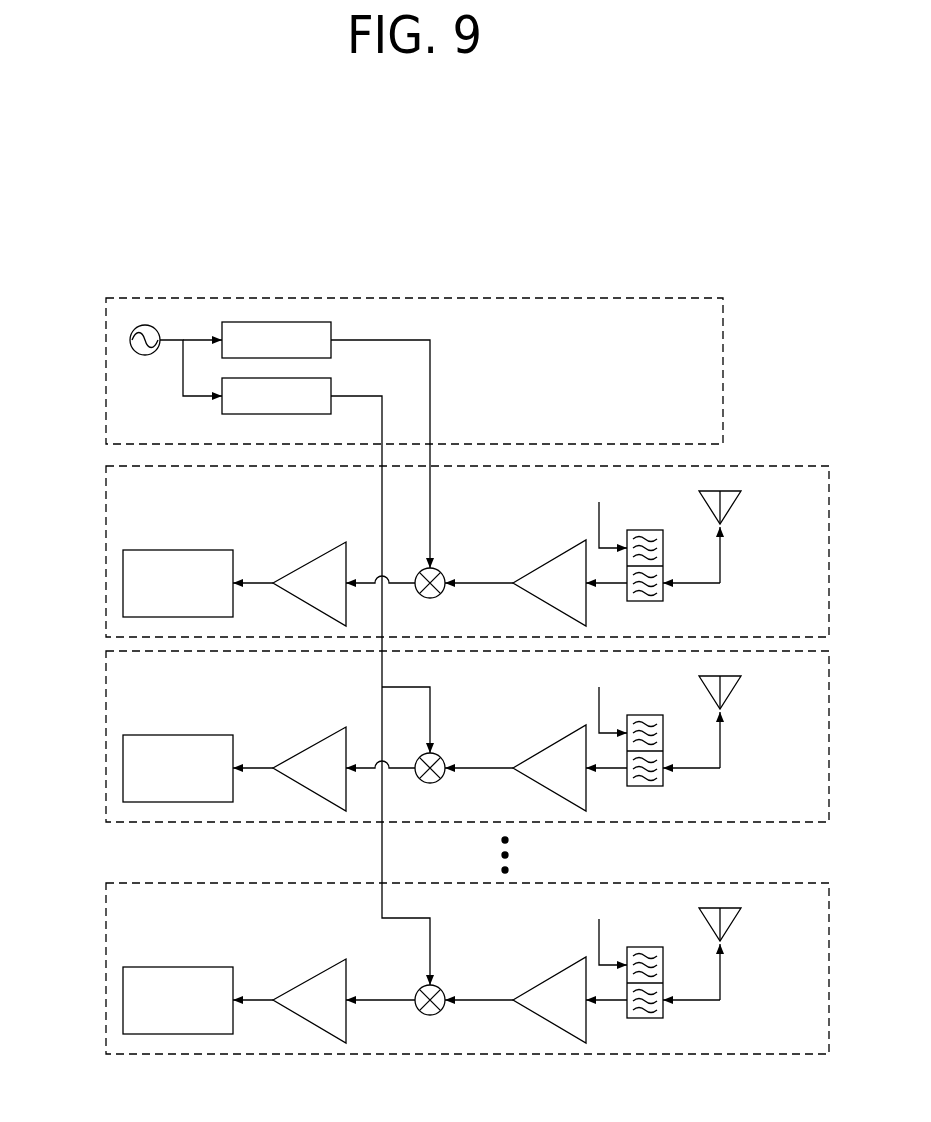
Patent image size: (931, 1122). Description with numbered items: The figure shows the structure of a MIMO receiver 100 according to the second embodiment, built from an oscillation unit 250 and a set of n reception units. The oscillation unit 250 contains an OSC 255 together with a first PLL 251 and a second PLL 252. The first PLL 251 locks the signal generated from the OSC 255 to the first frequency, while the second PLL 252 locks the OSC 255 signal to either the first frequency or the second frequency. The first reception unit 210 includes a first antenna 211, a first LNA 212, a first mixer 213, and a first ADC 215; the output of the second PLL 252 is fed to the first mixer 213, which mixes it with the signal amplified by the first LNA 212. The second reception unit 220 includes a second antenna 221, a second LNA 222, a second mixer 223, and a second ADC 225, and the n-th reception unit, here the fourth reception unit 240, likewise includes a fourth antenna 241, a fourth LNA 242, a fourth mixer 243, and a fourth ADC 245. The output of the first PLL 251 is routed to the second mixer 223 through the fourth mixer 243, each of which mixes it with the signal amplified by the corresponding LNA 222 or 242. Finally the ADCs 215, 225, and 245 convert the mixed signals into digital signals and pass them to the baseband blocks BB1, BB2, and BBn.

The wireless communication device 100 is at (632, 248).
The oscillation unit 250 is at (106, 382).
The OSC 255 is at (143, 325).
The second PLL 252 is at (273, 322).
The first PLL 251 is at (258, 414).
The first reception unit 210 is at (106, 542).
The first antenna 211 is at (735, 505).
The first LNA 212 is at (550, 560).
The first mixer 213 is at (420, 595).
The first ADC 215 is at (312, 560).
The second reception unit 220 is at (423, 736).
The second antenna 221 is at (753, 718).
The second LNA 222 is at (542, 749).
The second mixer 223 is at (419, 785).
The second ADC 225 is at (301, 749).
The fourth reception unit 240 is at (423, 968).
The fourth antenna 241 is at (753, 950).
The fourth LNA 242 is at (542, 981).
The fourth mixer 243 is at (419, 1017).
The fourth ADC 245 is at (301, 981).